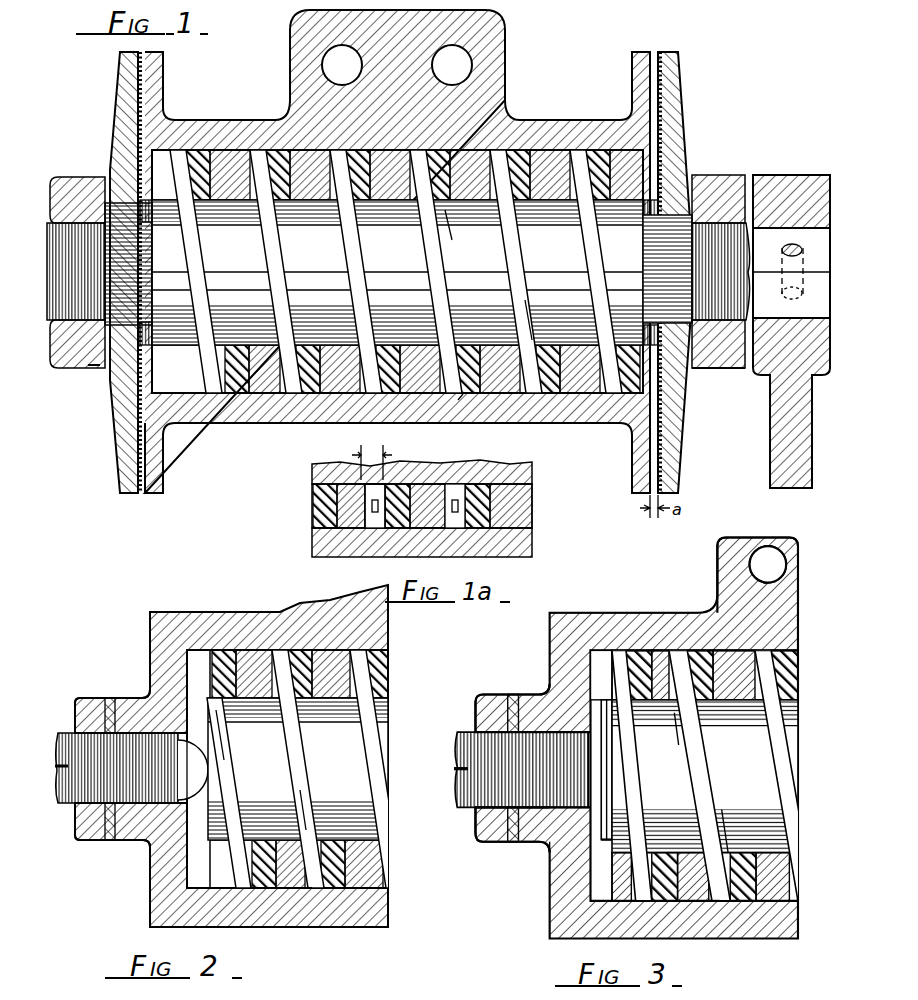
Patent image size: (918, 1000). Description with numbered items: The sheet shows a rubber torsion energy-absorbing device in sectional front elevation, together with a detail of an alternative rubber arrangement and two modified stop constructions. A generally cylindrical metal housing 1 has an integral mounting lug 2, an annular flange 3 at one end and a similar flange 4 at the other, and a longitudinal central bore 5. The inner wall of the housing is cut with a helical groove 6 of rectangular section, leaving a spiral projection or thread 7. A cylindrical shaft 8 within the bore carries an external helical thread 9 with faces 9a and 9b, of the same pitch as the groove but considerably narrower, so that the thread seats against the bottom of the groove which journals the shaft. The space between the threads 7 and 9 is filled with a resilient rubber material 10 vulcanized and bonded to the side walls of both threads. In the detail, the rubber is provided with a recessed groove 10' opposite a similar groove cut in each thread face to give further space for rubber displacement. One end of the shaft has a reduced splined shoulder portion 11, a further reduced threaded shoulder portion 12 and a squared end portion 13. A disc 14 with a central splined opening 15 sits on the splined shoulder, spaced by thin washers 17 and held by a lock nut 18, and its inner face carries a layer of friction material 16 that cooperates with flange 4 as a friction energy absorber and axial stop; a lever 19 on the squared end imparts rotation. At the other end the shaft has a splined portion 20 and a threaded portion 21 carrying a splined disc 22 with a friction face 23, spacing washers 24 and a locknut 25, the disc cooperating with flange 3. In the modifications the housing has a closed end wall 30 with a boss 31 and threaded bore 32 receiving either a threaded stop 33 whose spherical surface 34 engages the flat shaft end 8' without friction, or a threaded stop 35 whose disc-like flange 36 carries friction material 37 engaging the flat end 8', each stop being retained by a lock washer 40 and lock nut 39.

In FIG. 1, the housing 1 is at (397, 251).
In FIG. 2, the housing 1 is at (188, 612).
In FIG. 3, the housing 1 is at (585, 607).
In FIG. 1, the mounting lug 2 is at (500, 50).
In FIG. 3, the mounting lug 2 is at (698, 560).
In FIG. 1, the annular flange 3 is at (160, 455).
In FIG. 1, the annular flange 4 is at (632, 450).
In FIG. 3, the central bore 5 is at (626, 690).
In FIG. 1, the helical groove 6 is at (518, 150).
In FIG. 1A, the helical groove 6 is at (401, 506).
In FIG. 2, the helical groove 6 is at (300, 769).
In FIG. 3, the helical groove 6 is at (652, 642).
In FIG. 1, the spiral projection or thread 7 is at (538, 150).
In FIG. 1A, the spiral projection or thread 7 is at (500, 484).
In FIG. 2, the spiral projection or thread 7 is at (309, 769).
In FIG. 3, the spiral projection or thread 7 is at (630, 642).
In FIG. 1, the cylindrical shaft 8 is at (397, 272).
In FIG. 1A, the cylindrical shaft 8 is at (433, 542).
In FIG. 2, the cylindrical shaft 8 is at (292, 782).
In FIG. 3, the cylindrical shaft 8 is at (705, 776).
In FIG. 3, the flat end of shaft 8' is at (614, 783).
In FIG. 1, the external helical thread 9 is at (528, 262).
In FIG. 1A, the external helical thread 9 is at (375, 528).
In FIG. 2, the external helical thread 9 is at (300, 752).
In FIG. 3, the external helical thread 9 is at (690, 728).
In FIG. 1, the thread face 9a is at (495, 230).
In FIG. 1A, the thread face 9a is at (365, 528).
In FIG. 2, the thread face 9a is at (286, 728).
In FIG. 3, the thread face 9a is at (664, 712).
In FIG. 1, the thread face 9b is at (535, 308).
In FIG. 1A, the thread face 9b is at (385, 528).
In FIG. 2, the thread face 9b is at (316, 802).
In FIG. 3, the thread face 9b is at (704, 800).
In FIG. 1, the resilient material 10 is at (465, 423).
In FIG. 1A, the resilient material 10 is at (389, 457).
In FIG. 2, the resilient material 10 is at (302, 919).
In FIG. 3, the resilient material 10 is at (709, 932).
In FIG. 1A, the recessed groove in rubber 10' is at (384, 456).
In FIG. 1, the splined shoulder portion 11 is at (643, 258).
In FIG. 1, the threaded shoulder portion 12 is at (728, 220).
In FIG. 1, the squared end portion 13 is at (768, 228).
In FIG. 1, the disc 14 is at (680, 62).
In FIG. 1, the central splined opening 15 is at (676, 218).
In FIG. 1, the friction material layer 16 is at (658, 52).
In FIG. 1, the thin washers 17 is at (645, 200).
In FIG. 1, the lock nut 18 is at (712, 368).
In FIG. 1, the lever 19 is at (770, 418).
In FIG. 1, the splined portion 20 is at (152, 248).
In FIG. 1, the threaded portion 21 is at (50, 340).
In FIG. 1, the splined disc 22 is at (118, 462).
In FIG. 1, the friction face 23 is at (140, 493).
In FIG. 1, the spacing washers 24 is at (152, 345).
In FIG. 1, the locknut 25 is at (88, 368).
In FIG. 2, the end wall 30 is at (150, 905).
In FIG. 3, the end wall 30 is at (542, 888).
In FIG. 2, the boss 31 is at (128, 840).
In FIG. 3, the boss 31 is at (522, 820).
In FIG. 2, the threaded bore 32 is at (200, 770).
In FIG. 3, the threaded bore 32 is at (536, 861).
In FIG. 2, the threaded stop 33 is at (75, 805).
In FIG. 2, the spherical surface 34 is at (187, 733).
In FIG. 3, the threaded stop 35 is at (473, 790).
In FIG. 3, the disc like flange 36 is at (604, 674).
In FIG. 3, the friction material facing 37 is at (590, 820).
In FIG. 2, the lock nut 39 is at (80, 698).
In FIG. 3, the lock nut 39 is at (488, 683).
In FIG. 2, the lock washer 40 is at (110, 698).
In FIG. 3, the lock washer 40 is at (508, 683).